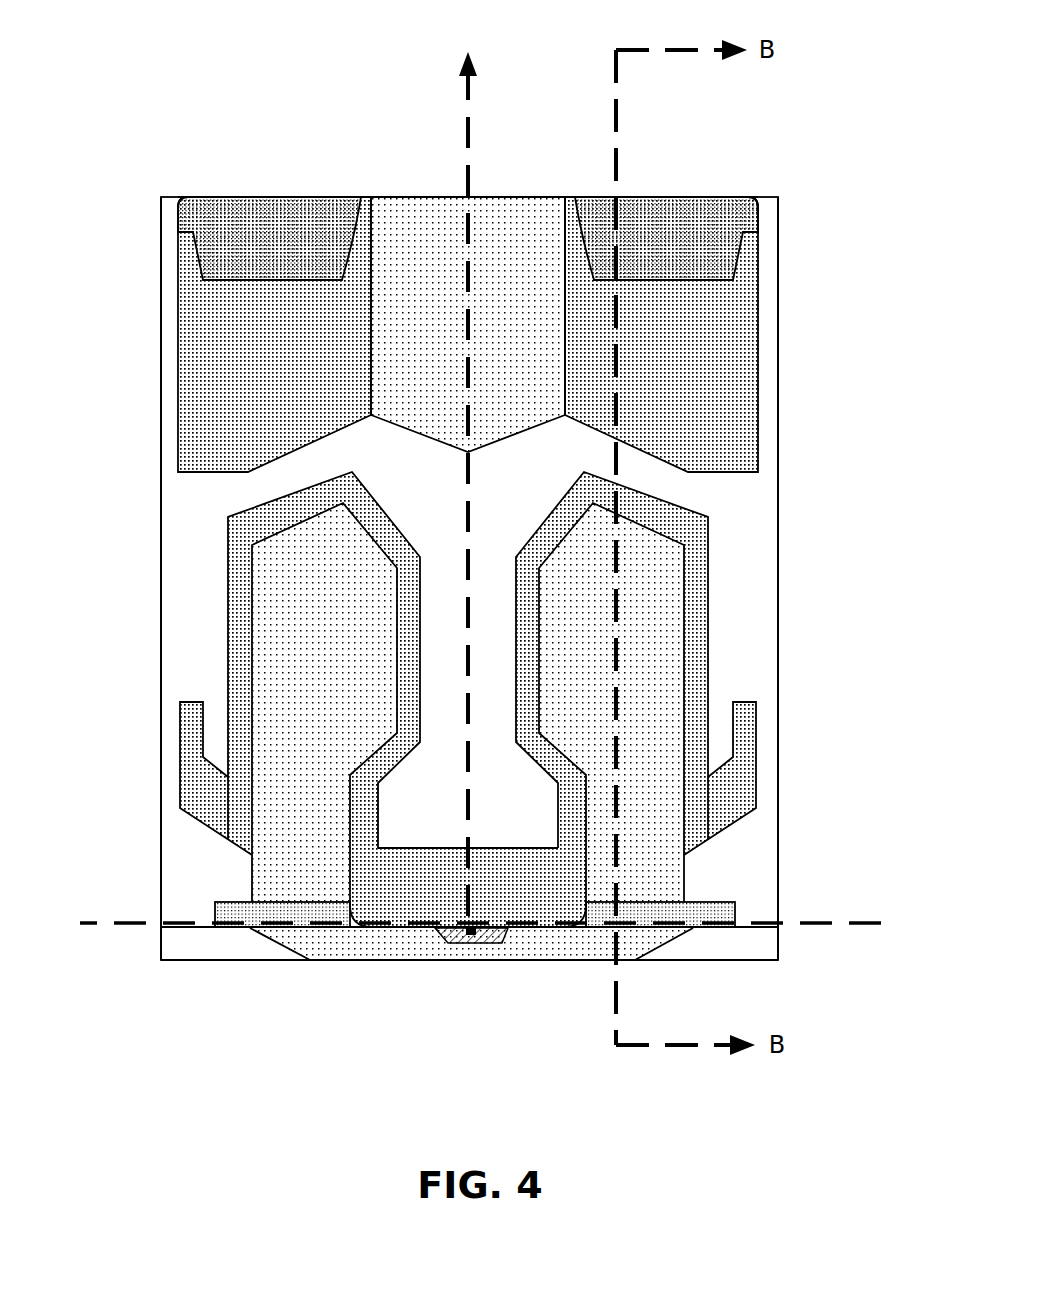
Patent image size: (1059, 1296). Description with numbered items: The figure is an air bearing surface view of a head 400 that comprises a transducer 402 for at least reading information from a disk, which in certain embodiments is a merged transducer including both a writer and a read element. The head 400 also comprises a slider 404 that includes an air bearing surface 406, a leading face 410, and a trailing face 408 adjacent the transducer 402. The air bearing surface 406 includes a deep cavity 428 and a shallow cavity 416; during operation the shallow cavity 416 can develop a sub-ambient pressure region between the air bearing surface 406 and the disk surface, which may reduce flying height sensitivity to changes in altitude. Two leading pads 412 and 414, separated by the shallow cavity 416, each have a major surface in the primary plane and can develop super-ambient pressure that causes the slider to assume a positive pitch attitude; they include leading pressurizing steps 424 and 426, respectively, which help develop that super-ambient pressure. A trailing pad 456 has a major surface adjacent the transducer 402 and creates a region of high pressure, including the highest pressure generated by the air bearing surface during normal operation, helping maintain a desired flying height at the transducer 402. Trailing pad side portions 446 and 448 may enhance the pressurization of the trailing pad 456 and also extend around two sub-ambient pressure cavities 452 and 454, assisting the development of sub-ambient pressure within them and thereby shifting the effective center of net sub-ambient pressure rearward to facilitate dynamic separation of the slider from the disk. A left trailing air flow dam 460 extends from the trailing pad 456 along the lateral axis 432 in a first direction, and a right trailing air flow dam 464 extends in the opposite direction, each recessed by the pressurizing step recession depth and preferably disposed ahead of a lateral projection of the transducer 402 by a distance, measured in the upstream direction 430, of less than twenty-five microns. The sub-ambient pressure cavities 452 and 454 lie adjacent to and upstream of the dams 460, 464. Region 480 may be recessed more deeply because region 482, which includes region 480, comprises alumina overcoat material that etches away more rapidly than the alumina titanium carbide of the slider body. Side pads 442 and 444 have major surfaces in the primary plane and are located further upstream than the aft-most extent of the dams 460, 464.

The head 400 is at (167, 142).
The transducer 402 is at (473, 935).
The slider 404 is at (160, 545).
The air bearing surface 406 is at (766, 300).
The trailing face 408 is at (220, 961).
The leading face 410 is at (335, 195).
The leading pad 412 is at (264, 369).
The leading pad 414 is at (635, 366).
The shallow cavity 416 is at (487, 245).
The leading pressurizing step 424 is at (243, 251).
The leading pressurizing step 426 is at (635, 251).
The deep cavity 428 is at (400, 501).
The upstream direction 430 is at (470, 471).
The lateral axis 432 is at (130, 926).
The side pad 442 is at (193, 808).
The side pad 444 is at (704, 808).
The trailing pad side portion 446 is at (410, 666).
The trailing pad side portion 448 is at (530, 688).
The sub-ambient pressure cavity 452 is at (263, 614).
The sub-ambient pressure cavity 454 is at (635, 611).
The trailing pad 456 is at (512, 893).
The left trailing air flow dam 460 is at (243, 916).
The right trailing air flow dam 464 is at (720, 913).
The region 480 is at (373, 942).
The region 482 is at (752, 942).